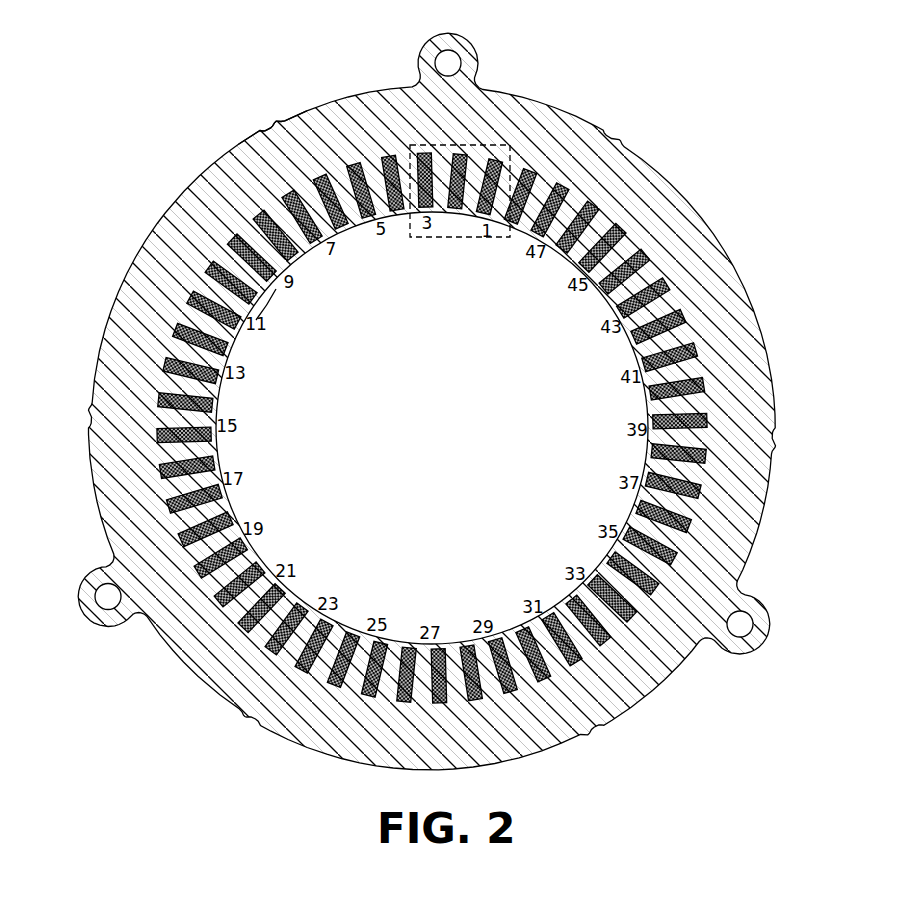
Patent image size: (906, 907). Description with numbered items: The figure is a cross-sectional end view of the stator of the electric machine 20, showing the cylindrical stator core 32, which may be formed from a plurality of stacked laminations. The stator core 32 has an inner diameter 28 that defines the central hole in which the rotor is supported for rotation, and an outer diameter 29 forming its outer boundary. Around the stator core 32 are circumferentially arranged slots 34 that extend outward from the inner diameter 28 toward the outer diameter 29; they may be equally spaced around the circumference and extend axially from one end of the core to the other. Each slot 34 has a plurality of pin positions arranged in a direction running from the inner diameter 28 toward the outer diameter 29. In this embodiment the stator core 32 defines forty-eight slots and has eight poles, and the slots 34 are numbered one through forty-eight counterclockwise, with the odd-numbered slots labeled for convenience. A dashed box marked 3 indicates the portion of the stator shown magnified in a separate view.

The electric machine 20 is at (150, 48).
The inner diameter 28 is at (264, 286).
The outer diameter 29 is at (313, 105).
The stator core 32 is at (690, 191).
The slots 34 is at (352, 236).
The detail region of FIG. 3 is at (473, 145).